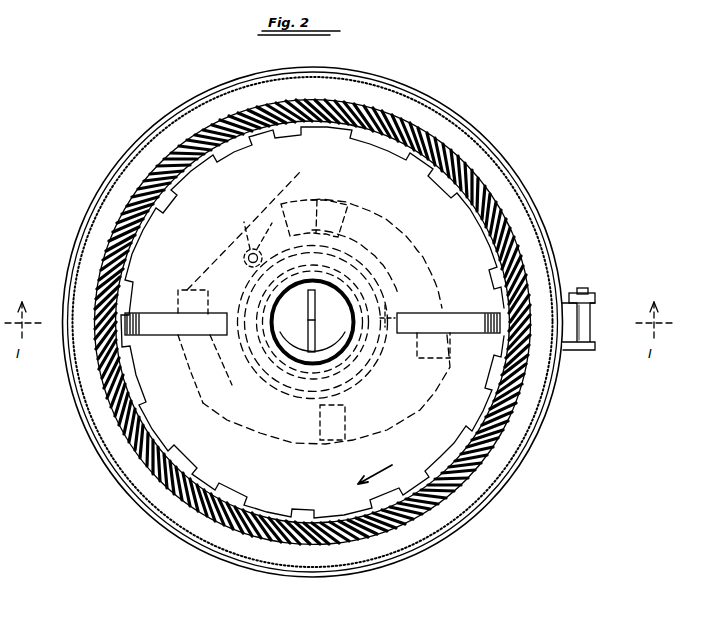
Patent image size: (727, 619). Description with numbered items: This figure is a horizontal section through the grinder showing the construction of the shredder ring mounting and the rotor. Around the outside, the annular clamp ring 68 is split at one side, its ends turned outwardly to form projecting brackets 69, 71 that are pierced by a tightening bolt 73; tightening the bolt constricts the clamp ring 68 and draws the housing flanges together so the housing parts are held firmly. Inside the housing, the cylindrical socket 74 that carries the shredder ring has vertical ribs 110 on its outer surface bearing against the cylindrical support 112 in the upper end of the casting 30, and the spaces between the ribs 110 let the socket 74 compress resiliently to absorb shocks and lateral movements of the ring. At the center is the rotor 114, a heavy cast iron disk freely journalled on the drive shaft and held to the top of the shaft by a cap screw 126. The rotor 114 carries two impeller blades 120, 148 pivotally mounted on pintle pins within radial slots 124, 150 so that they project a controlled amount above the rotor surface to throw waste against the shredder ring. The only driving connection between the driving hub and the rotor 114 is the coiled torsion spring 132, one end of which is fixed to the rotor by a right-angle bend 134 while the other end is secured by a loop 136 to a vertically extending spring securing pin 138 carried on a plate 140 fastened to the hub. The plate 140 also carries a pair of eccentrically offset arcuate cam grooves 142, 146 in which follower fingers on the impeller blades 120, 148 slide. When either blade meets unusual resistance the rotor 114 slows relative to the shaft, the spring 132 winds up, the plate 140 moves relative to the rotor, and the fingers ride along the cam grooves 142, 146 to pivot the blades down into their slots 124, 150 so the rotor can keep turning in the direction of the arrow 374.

The casting 30 is at (433, 549).
The annular clamp ring 68 is at (532, 204).
The projecting bracket 69 is at (564, 296).
The projecting bracket 71 is at (565, 348).
The tightening bolt 73 is at (592, 326).
The cylindrical socket 74 is at (483, 420).
The vertical ribs 110 is at (485, 456).
The cylindrical support 112 is at (440, 485).
The rotor 114 is at (178, 427).
The impeller blade 120 is at (455, 313).
The slot 124 is at (490, 313).
The cap screw 126 is at (310, 283).
The coiled torsion spring 132 is at (372, 370).
The bend 134 is at (358, 323).
The loop 136 is at (260, 251).
The spring securing pin 138 is at (250, 211).
The plate 140 is at (270, 207).
The arcuate cam groove 142 is at (425, 270).
The arcuate cam groove 146 is at (198, 282).
The impeller blade 148 is at (176, 300).
The radial slot 150 is at (153, 276).
The arrow 374 is at (383, 462).